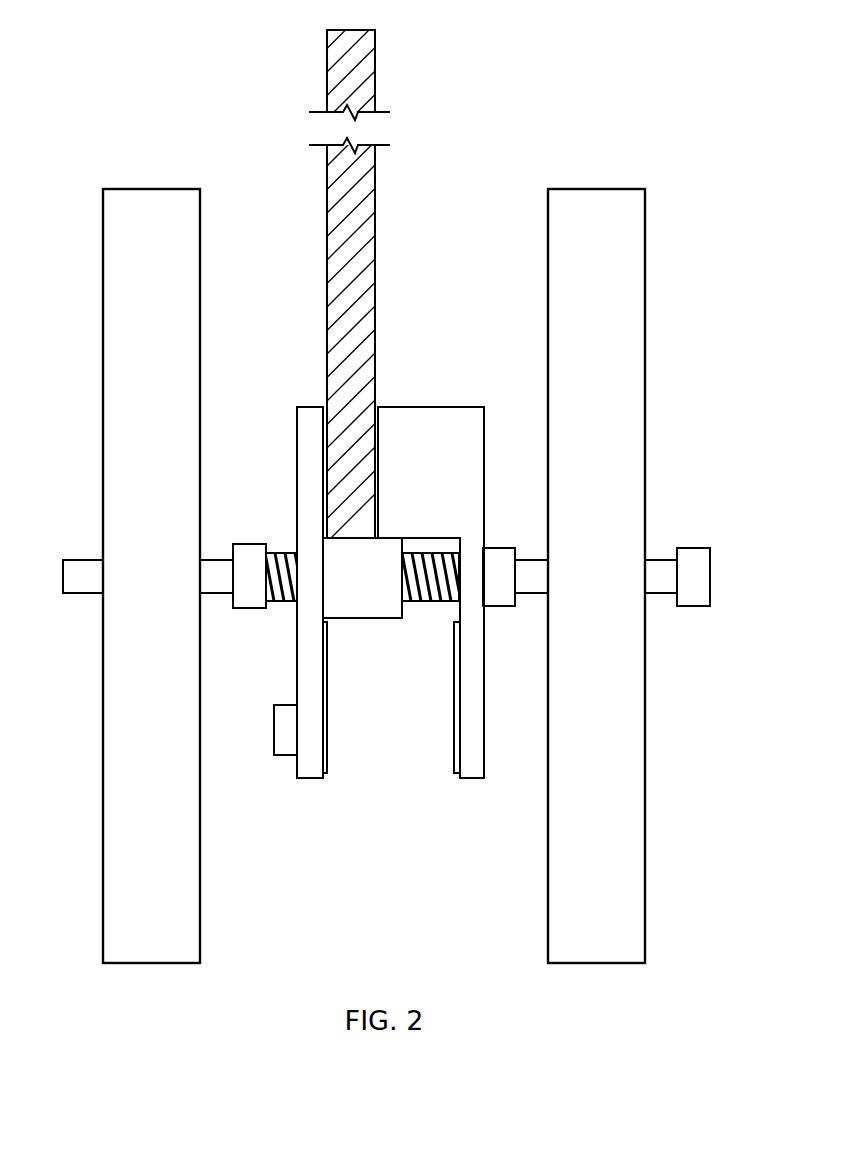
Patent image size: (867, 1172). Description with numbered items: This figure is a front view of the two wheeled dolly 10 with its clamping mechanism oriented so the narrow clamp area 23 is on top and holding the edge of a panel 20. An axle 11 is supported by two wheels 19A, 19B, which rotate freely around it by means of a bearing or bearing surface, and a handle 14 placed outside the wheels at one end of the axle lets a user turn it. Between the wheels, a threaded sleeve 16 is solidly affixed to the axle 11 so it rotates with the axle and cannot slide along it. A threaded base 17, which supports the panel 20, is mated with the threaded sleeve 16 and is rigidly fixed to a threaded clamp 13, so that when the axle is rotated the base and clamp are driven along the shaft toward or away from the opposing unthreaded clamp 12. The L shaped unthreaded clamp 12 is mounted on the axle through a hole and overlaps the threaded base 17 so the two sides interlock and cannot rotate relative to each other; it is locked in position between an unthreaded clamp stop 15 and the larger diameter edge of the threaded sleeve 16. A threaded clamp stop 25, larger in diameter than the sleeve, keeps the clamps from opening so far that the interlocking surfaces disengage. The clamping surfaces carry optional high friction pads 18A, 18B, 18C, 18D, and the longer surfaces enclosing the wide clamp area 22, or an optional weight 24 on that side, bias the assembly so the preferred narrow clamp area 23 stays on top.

The dolly 10 is at (665, 683).
The axle 11 is at (69, 548).
The unthreaded clamp 12 is at (361, 588).
The threaded clamp 13 is at (293, 670).
The handle 14 is at (716, 535).
The unthreaded clamp stop 15 is at (500, 613).
The threaded sleeve 16 is at (281, 548).
The threaded base 17 is at (347, 591).
The friction pad 18A is at (442, 755).
The friction pad 18B is at (338, 755).
The friction pad 18C is at (318, 395).
The friction pad 18D is at (381, 397).
The wheel 19A is at (168, 750).
The wheel 19B is at (616, 753).
The panel 20 is at (358, 275).
The wide clamp area 22 is at (381, 670).
The narrow clamp area 23 is at (319, 349).
The weight 24 is at (282, 768).
The threaded clamp stop 25 is at (244, 618).